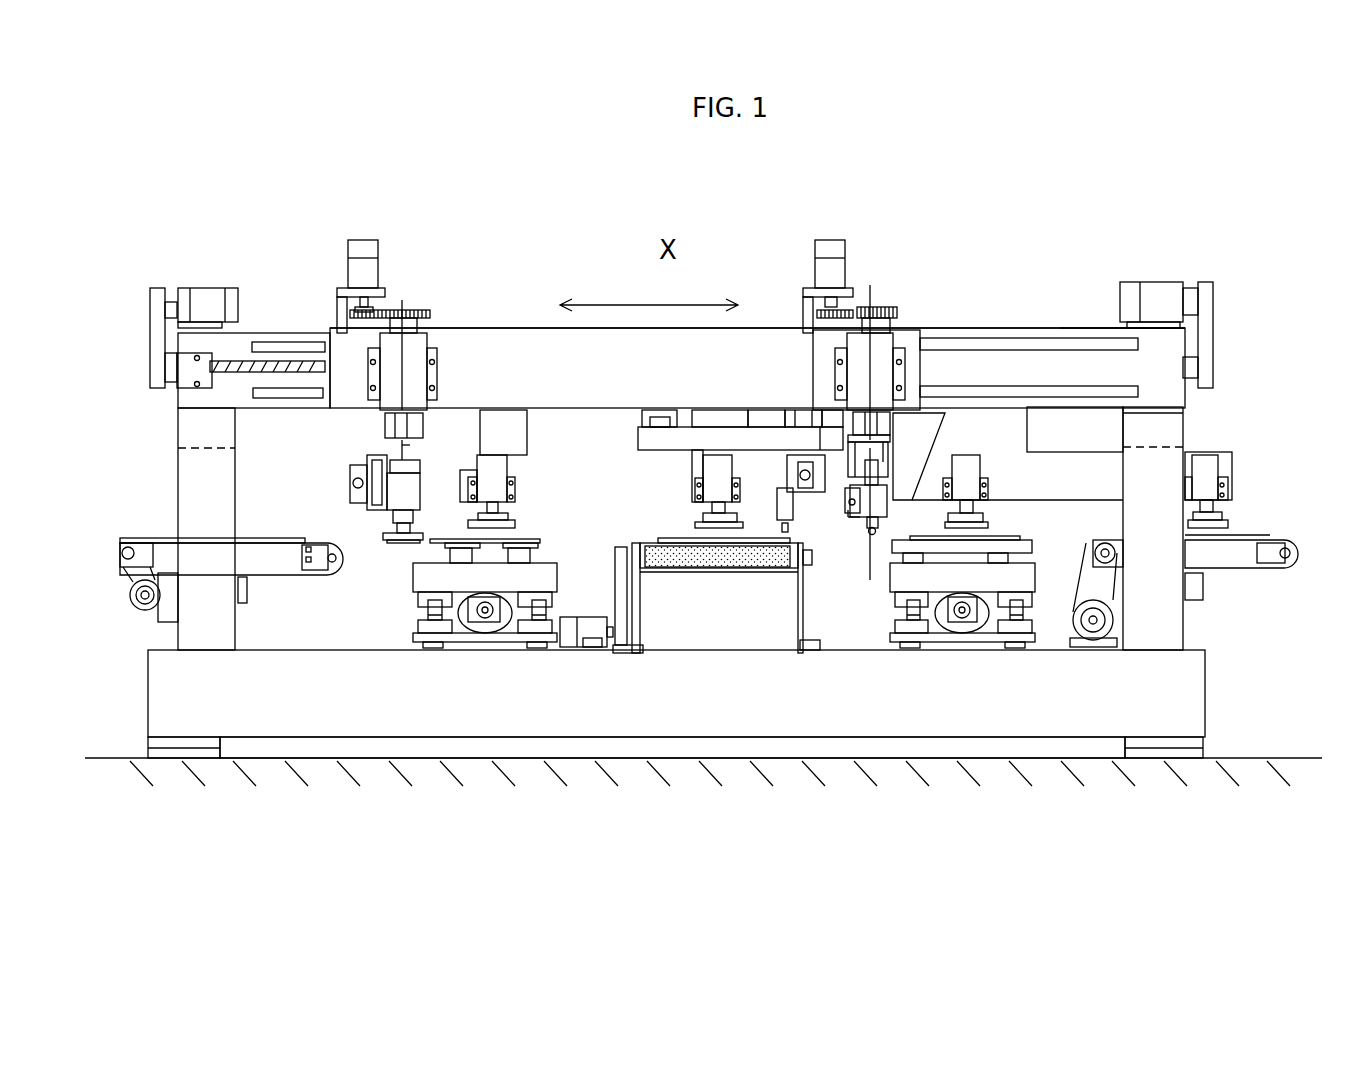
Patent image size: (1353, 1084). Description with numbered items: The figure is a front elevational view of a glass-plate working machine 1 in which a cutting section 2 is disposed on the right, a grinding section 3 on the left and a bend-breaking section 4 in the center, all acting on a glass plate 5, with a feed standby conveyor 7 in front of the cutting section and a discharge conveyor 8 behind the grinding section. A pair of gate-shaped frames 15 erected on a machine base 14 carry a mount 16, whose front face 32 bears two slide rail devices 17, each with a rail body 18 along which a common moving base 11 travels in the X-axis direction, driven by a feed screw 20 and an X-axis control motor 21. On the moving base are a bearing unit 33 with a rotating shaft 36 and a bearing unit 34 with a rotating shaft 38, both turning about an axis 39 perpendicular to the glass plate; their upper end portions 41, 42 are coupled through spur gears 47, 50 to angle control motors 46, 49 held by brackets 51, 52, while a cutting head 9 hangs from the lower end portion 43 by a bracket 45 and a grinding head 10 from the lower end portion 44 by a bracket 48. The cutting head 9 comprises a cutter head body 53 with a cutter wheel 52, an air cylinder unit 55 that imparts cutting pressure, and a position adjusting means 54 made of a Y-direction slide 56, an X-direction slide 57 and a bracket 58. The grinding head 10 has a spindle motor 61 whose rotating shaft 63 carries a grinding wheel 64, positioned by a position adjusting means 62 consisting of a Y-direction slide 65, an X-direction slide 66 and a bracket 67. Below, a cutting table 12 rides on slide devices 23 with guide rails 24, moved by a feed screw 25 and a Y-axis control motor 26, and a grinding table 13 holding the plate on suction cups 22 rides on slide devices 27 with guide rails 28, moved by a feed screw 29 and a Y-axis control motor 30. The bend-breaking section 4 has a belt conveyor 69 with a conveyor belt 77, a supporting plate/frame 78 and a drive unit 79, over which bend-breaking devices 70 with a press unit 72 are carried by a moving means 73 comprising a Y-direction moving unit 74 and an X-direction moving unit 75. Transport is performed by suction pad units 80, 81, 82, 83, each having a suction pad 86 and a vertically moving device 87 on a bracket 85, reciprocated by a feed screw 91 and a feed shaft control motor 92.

The glass-plate working machine 1 is at (1067, 312).
The cutting section 2 is at (961, 689).
The grinding section 3 is at (485, 685).
The bend-breaking section 4 is at (728, 548).
The glass plate 5 is at (262, 540).
The feed standby conveyor 7 is at (1232, 556).
The discharge conveyor 8 is at (268, 562).
The cutting head 9 is at (884, 462).
The grinding head 10 is at (405, 485).
The moving base 11 is at (523, 345).
The cutting table 12 is at (1005, 550).
The grinding table 13 is at (542, 576).
The machine base 14 is at (775, 712).
The gate-shaped frames 15 is at (192, 428).
The mount 16 is at (1020, 336).
The slide rail devices 17 is at (322, 372).
The rail body 18 is at (283, 382).
The feed screw 20 is at (262, 356).
The X-axis control motor 21 is at (215, 300).
The suction cups 22 is at (527, 553).
The slide devices 23 is at (908, 614).
The guide rail 24 is at (912, 640).
The feed screw 25 is at (955, 622).
The Y-axis control motor 26 is at (985, 642).
The slide devices 27 is at (430, 614).
The guide rail 28 is at (432, 640).
The feed screw 29 is at (487, 625).
The Y-axis control motor 30 is at (460, 612).
The front face 32 is at (558, 345).
The bearing unit 33 is at (863, 372).
The bearing unit 34 is at (412, 372).
The rotating shaft 36 is at (888, 332).
The rotating shaft 38 is at (422, 328).
The axis 39 is at (868, 578).
The upper end portion 41 is at (872, 308).
The upper end portion 42 is at (416, 312).
The lower end portion 43 is at (878, 418).
The lower end portion 44 is at (395, 432).
The bracket 45 is at (886, 425).
The angle control motor 46 is at (833, 262).
The spur gears 47 is at (893, 310).
The bracket 48 is at (392, 440).
The angle control motor 49 is at (368, 262).
The spur gears 50 is at (400, 310).
The bracket 51 is at (805, 305).
The cutter wheel 52 is at (338, 303).
The cutter head body 53 is at (860, 522).
The position adjusting means 54 is at (814, 500).
The air cylinder unit 55 is at (880, 478).
The Y-direction slide 56 is at (846, 519).
The X-direction slide 57 is at (884, 500).
The bracket 58 is at (895, 455).
The spindle motor 61 is at (395, 495).
The position adjusting means 62 is at (378, 492).
The rotating shaft 63 is at (400, 522).
The grinding wheel 64 is at (402, 545).
The Y-direction slide 65 is at (358, 492).
The X-direction slide 66 is at (410, 513).
The bracket 67 is at (405, 463).
The belt conveyor 69 is at (745, 553).
The bend-breaking devices 70 is at (790, 566).
The press unit 72 is at (780, 510).
The moving means 73 is at (773, 433).
The Y-direction moving unit 74 is at (807, 490).
The X-direction moving unit 75 is at (655, 440).
The conveyor belt 77 is at (720, 555).
The supporting plate/frame 78 is at (645, 560).
The drive unit 79 is at (583, 625).
The suction pad unit 80 is at (1212, 476).
The suction pad unit 81 is at (975, 487).
The suction pad unit 82 is at (710, 490).
The suction pad unit 83 is at (493, 488).
The brackets 85 is at (707, 412).
The suction pad 86 is at (700, 522).
The vertically moving device 87 is at (710, 463).
The feed screw 91 is at (1203, 370).
The feed shaft control motor 92 is at (1153, 300).